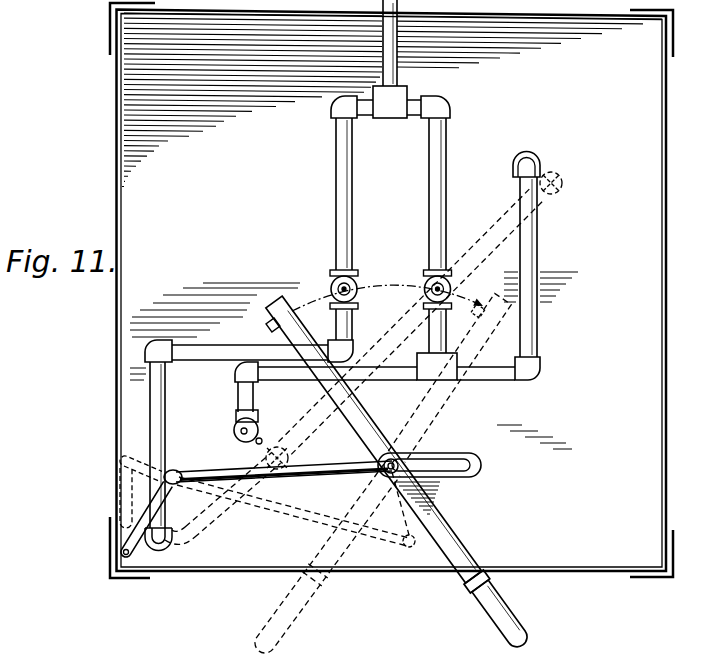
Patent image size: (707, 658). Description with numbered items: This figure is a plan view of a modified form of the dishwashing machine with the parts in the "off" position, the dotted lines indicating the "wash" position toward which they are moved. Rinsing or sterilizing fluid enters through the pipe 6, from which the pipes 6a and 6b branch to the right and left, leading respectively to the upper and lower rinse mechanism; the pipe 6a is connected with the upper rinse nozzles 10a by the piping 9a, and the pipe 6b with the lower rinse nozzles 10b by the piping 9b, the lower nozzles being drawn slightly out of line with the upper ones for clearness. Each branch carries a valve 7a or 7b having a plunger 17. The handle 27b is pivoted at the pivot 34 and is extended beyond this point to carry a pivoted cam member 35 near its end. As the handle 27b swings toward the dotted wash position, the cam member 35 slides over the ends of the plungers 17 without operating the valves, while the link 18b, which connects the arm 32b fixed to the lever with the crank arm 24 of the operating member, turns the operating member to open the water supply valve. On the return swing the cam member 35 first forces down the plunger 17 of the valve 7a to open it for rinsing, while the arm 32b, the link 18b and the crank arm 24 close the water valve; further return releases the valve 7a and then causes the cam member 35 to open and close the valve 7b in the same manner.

The pipe 6 is at (412, 70).
The pipe 6a is at (446, 148).
The pipe 6b is at (337, 160).
The valve 7a is at (423, 292).
The valve 7b is at (331, 289).
The piping 9a is at (539, 242).
The piping 9b is at (164, 398).
The upper spray nozzles 10a is at (526, 152).
The lower spray nozzles 10b is at (565, 190).
The plunger 17 is at (420, 292).
The link 18b is at (362, 467).
The crank arm 24 is at (133, 531).
The handle 27b is at (488, 608).
The arm 32b is at (434, 455).
The pivot 34 is at (391, 457).
The cam member 35 is at (269, 331).